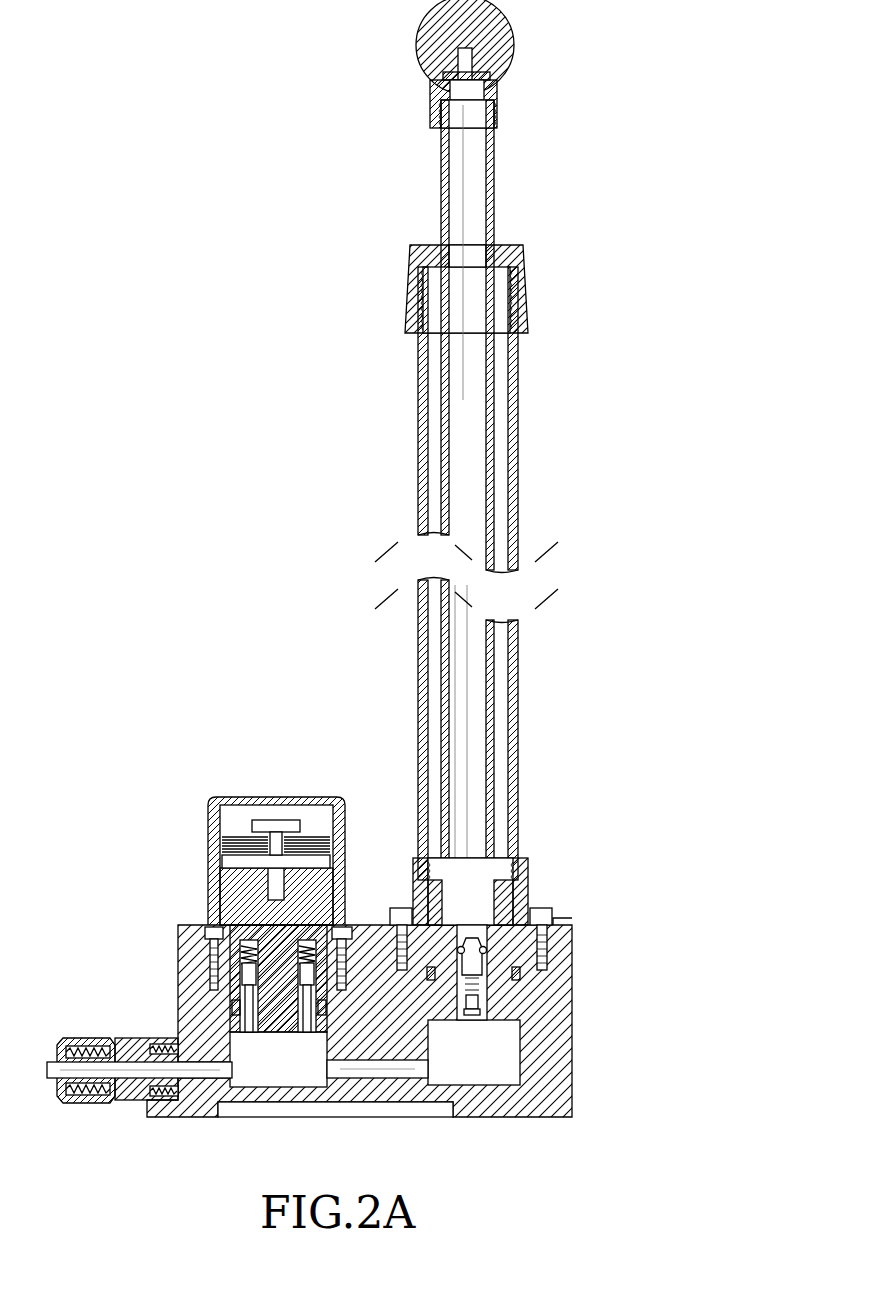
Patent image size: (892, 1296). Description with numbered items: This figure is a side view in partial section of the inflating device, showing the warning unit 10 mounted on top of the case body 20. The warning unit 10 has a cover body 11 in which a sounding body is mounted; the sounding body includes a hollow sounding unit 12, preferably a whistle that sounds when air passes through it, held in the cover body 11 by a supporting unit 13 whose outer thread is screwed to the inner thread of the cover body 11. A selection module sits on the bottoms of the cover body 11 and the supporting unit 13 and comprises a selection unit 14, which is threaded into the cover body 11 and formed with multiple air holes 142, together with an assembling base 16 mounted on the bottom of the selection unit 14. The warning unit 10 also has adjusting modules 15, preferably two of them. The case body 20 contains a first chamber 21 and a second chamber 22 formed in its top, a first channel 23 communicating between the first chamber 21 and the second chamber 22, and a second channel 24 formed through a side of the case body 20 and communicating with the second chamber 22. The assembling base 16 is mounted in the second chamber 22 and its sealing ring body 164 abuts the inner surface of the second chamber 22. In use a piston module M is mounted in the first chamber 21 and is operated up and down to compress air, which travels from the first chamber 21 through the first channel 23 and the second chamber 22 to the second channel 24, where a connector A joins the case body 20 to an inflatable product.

The warning unit 10 is at (252, 889).
The cover body 11 is at (326, 797).
The sounding unit 12 is at (292, 821).
The supporting unit 13 is at (243, 838).
The selection unit 14 is at (226, 892).
The air holes 142 is at (236, 862).
The adjusting modules 15 is at (216, 941).
The assembling base 16 is at (206, 949).
The sealing ring body 164 is at (236, 1008).
The case body 20 is at (188, 991).
The first chamber 21 is at (500, 1075).
The second chamber 22 is at (285, 1075).
The first channel 23 is at (396, 1076).
The second channel 24 is at (201, 1080).
The connector A is at (100, 1096).
The piston module M is at (470, 726).